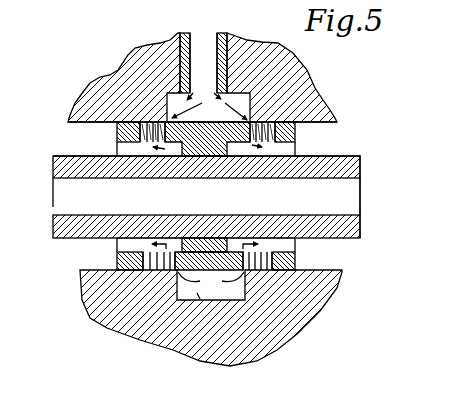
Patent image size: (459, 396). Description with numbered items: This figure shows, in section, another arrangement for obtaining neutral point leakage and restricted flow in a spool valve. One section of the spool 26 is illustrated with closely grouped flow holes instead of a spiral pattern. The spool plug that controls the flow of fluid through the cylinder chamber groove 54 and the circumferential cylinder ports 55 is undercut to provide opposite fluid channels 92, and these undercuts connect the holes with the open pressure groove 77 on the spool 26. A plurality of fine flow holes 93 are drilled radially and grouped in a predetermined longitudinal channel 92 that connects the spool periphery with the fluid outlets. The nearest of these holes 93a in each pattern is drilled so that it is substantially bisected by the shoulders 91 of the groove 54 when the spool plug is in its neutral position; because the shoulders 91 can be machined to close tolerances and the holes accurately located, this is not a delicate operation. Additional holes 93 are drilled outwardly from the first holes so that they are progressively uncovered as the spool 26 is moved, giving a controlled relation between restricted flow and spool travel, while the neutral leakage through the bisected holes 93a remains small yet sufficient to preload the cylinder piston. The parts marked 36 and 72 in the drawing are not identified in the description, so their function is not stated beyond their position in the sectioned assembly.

The spool 26 is at (358, 156).
The passage 36 is at (86, 259).
The cylinder chamber groove 54 is at (250, 104).
The circumferential cylinder ports 55 is at (197, 53).
The shaft 72 is at (206, 197).
The open pressure groove 77 is at (328, 260).
The shoulders 91 is at (180, 34).
The fluid channels 92 is at (128, 147).
The fine flow holes 93 is at (123, 121).
The nearest holes 93a is at (236, 122).